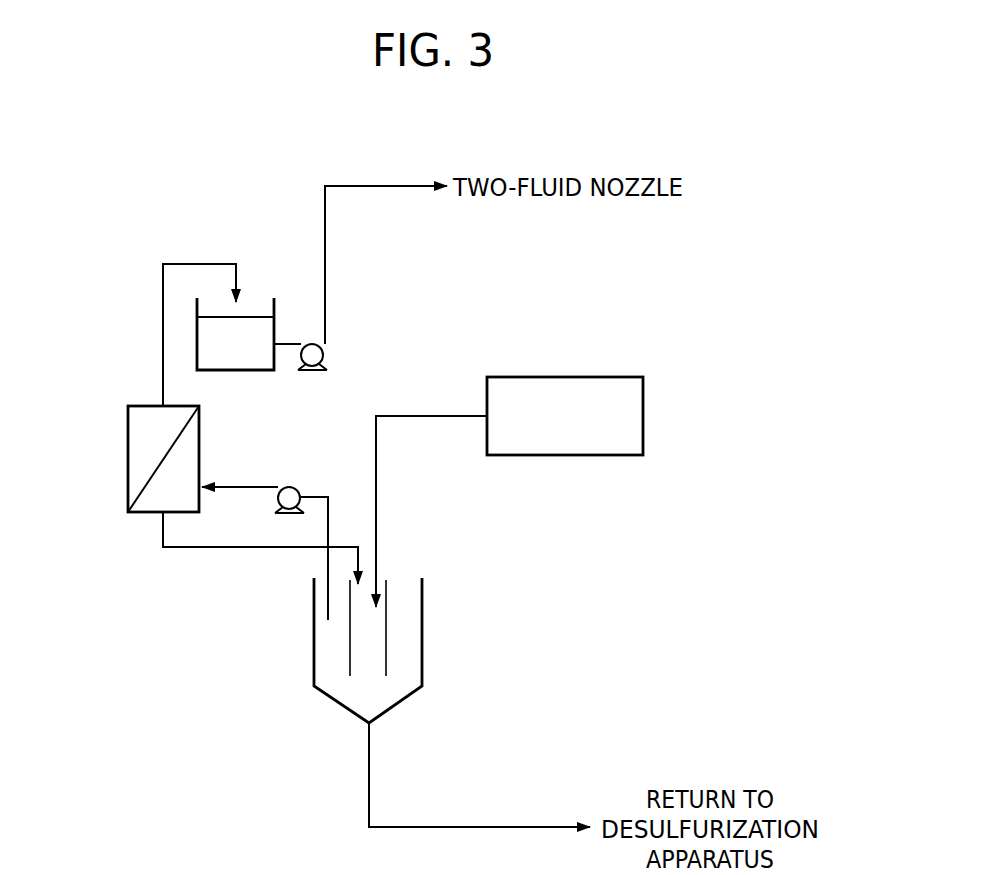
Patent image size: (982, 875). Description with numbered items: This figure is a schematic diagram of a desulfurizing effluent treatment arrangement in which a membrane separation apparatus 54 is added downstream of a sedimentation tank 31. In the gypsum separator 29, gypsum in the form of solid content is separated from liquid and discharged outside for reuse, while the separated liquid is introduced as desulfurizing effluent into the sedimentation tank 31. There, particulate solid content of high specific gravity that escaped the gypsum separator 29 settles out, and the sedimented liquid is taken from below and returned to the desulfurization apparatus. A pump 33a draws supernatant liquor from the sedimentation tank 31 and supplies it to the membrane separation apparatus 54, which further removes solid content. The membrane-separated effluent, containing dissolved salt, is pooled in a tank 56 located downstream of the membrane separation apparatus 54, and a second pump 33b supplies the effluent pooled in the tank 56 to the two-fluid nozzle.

The gypsum separator 29 is at (571, 377).
The sedimentation tank 31 is at (314, 623).
The pump 33a is at (300, 487).
The pump 33b is at (325, 361).
The membrane separation apparatus 54 is at (128, 446).
The tank 56 is at (227, 372).